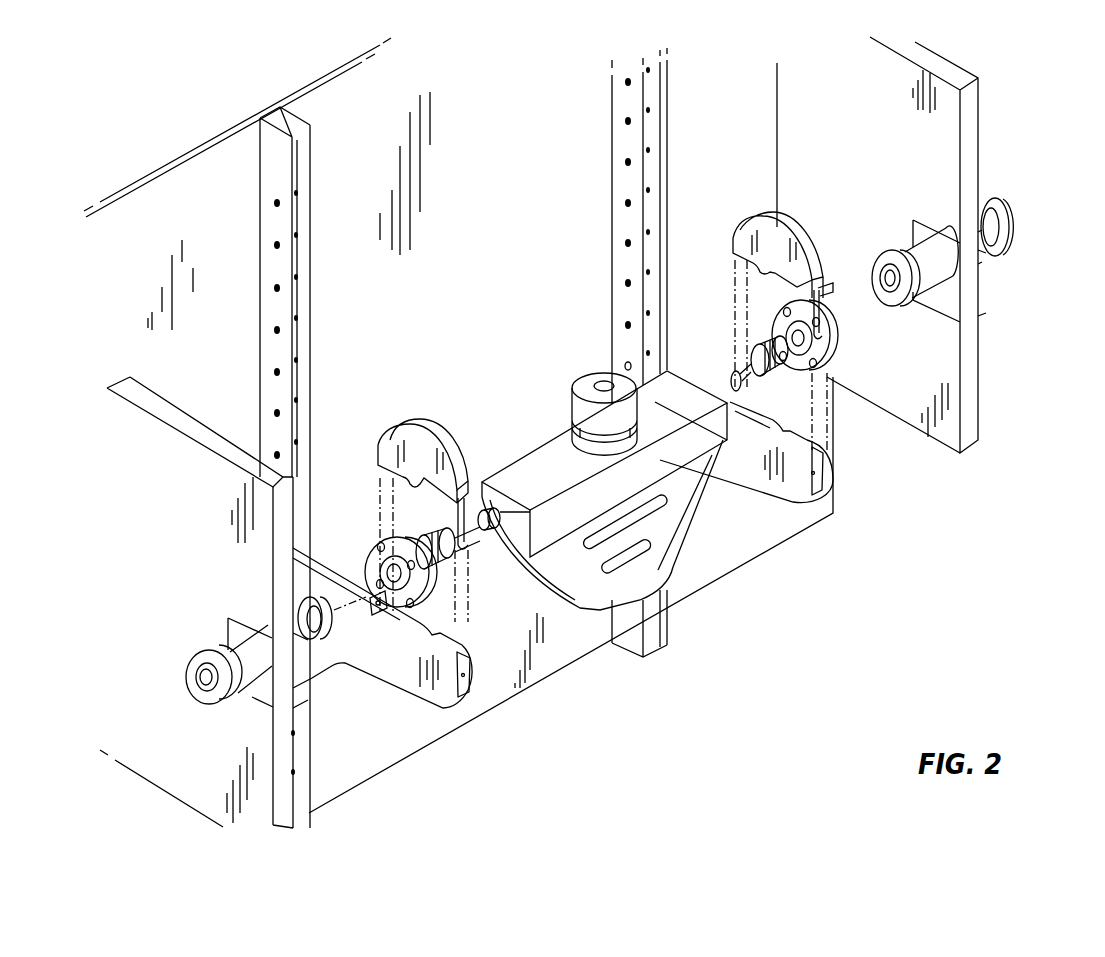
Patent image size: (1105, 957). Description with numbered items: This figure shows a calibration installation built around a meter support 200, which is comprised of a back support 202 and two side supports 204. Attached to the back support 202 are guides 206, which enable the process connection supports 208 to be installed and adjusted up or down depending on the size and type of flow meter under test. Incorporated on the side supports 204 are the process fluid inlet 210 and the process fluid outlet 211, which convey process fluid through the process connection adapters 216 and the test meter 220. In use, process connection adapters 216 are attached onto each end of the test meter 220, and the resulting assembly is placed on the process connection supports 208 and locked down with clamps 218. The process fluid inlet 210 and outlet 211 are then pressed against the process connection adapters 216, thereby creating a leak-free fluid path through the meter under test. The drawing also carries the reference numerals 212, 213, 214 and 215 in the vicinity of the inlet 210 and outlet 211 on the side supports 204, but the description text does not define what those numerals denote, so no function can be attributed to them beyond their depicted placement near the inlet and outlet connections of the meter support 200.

The meter support 200 is at (950, 534).
The back support 202 is at (340, 115).
The side supports 204 is at (190, 430).
The guides 206 is at (318, 325).
The process connection supports 208 is at (416, 686).
The process fluid inlet 210 is at (229, 650).
The process fluid outlet 211 is at (972, 270).
The pipe coupling 212 is at (325, 628).
The pipe flange 213 is at (893, 302).
The pipe flange 214 is at (213, 698).
The pipe coupling 215 is at (1014, 229).
The process connection adapters 216 is at (372, 560).
The clamps 218 is at (426, 430).
The test meter 220 is at (542, 455).